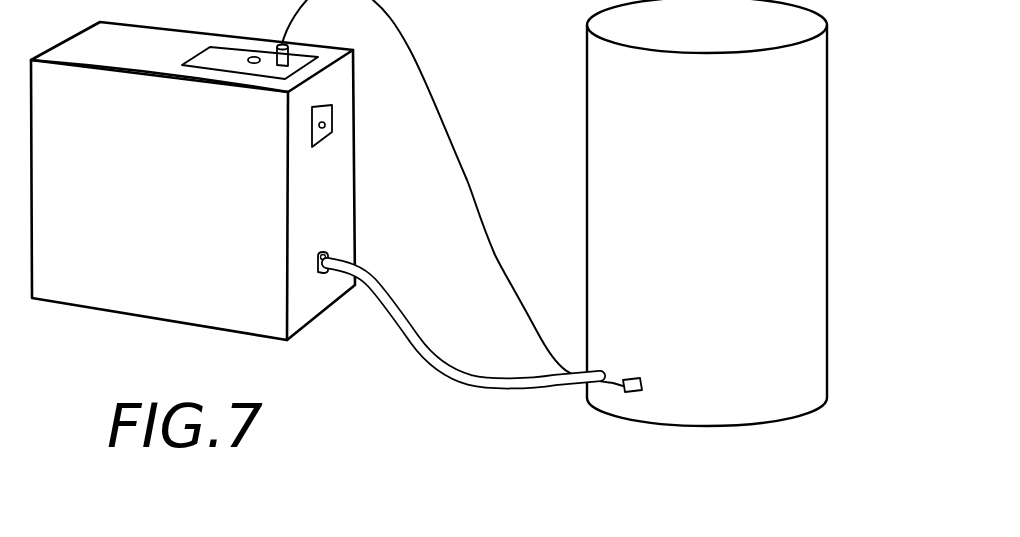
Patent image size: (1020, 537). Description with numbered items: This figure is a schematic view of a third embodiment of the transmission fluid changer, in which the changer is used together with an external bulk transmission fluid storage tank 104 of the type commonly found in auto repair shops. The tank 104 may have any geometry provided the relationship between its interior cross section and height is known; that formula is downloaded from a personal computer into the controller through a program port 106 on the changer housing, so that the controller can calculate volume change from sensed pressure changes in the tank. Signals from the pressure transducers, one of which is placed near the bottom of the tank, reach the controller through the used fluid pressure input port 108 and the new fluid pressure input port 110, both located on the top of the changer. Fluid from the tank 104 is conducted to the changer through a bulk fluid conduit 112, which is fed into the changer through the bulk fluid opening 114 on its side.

The external bulk transmission fluid storage tank 104 is at (820, 150).
The program port 106 is at (325, 125).
The used fluid pressure input port 108 is at (255, 57).
The new fluid pressure input port 110 is at (281, 67).
The bulk fluid conduit 112 is at (432, 370).
The bulk fluid opening 114 is at (328, 254).